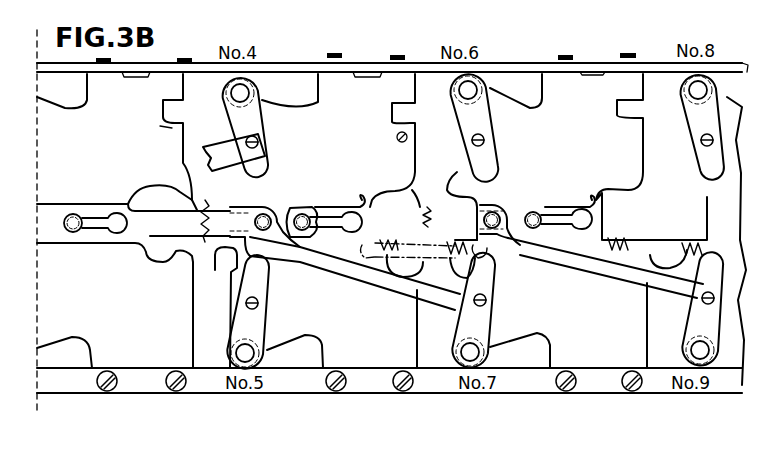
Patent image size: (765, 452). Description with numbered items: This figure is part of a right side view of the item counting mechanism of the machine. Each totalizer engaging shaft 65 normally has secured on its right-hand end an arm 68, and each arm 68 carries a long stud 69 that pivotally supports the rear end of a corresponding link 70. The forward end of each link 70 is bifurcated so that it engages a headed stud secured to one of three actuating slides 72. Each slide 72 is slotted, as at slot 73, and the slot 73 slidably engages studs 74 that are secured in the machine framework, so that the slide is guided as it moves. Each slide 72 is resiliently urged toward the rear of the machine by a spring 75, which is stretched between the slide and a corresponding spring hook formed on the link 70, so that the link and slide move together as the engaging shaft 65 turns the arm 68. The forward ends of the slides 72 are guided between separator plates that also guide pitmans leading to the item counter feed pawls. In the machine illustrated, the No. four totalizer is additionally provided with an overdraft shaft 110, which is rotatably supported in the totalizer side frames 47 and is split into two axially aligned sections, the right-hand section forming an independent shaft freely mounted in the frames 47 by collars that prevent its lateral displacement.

The totalizer side frame 47 is at (170, 128).
The totalizer engaging shaft 65 is at (249, 98).
The arm 68 is at (263, 133).
The long stud 69 is at (258, 148).
The link 70 is at (218, 144).
The actuating slide 72 is at (200, 212).
The slot 73 is at (325, 215).
The stud 74 is at (262, 197).
The spring 75 is at (387, 262).
The overdraft shaft 110 is at (398, 133).